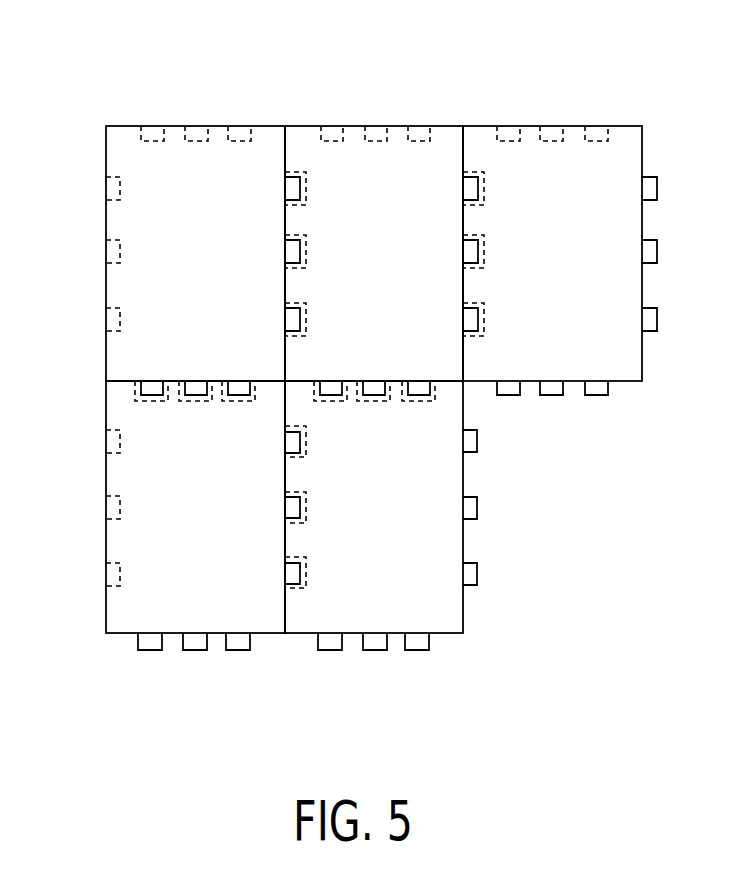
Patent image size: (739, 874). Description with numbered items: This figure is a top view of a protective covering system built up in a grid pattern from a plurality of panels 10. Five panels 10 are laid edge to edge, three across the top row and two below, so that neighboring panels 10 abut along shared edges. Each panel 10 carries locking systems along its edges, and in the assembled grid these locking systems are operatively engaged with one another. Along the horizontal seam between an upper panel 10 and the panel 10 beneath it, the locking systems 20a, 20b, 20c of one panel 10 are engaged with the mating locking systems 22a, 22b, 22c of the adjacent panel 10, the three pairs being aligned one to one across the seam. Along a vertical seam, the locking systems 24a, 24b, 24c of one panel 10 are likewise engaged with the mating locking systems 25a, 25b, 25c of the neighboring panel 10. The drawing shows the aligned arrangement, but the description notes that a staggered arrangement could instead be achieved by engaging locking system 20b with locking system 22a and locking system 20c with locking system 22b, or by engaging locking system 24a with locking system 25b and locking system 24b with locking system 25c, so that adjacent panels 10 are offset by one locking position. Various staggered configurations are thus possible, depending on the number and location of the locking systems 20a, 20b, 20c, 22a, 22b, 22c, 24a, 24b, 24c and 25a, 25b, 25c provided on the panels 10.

The panel 10 is at (381, 388).
The locking system 20a is at (153, 385).
The locking system 20b is at (197, 385).
The locking system 20c is at (238, 385).
The locking system 22a is at (133, 394).
The locking system 22b is at (192, 402).
The locking system 22c is at (266, 383).
The locking system 24a is at (285, 442).
The locking system 24b is at (285, 503).
The locking system 24c is at (285, 573).
The locking system 25a is at (307, 442).
The locking system 25b is at (307, 507).
The locking system 25c is at (307, 575).